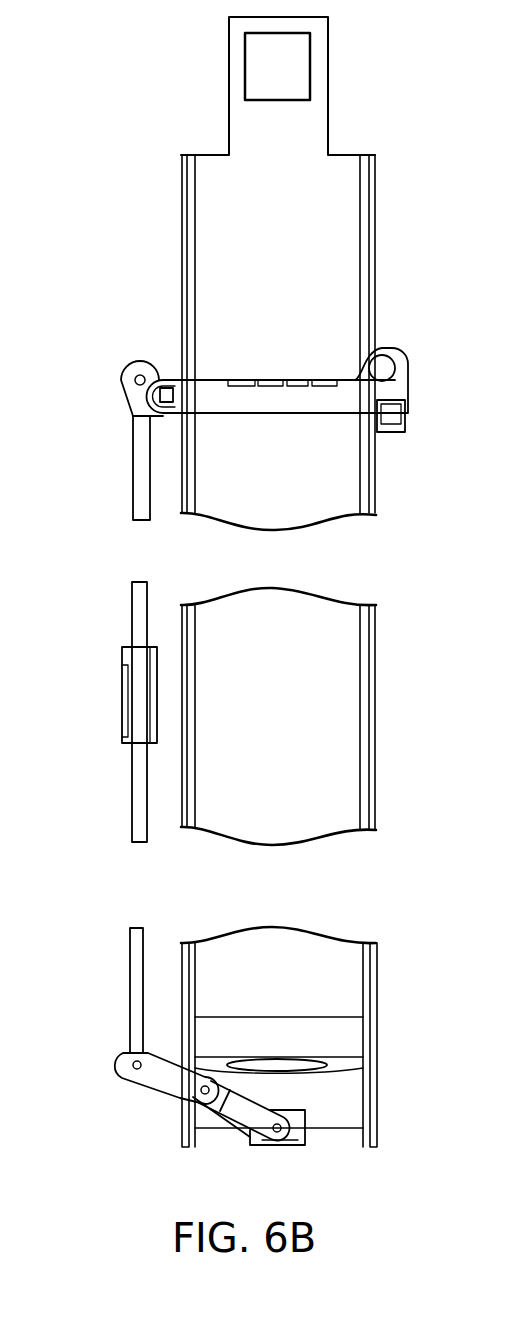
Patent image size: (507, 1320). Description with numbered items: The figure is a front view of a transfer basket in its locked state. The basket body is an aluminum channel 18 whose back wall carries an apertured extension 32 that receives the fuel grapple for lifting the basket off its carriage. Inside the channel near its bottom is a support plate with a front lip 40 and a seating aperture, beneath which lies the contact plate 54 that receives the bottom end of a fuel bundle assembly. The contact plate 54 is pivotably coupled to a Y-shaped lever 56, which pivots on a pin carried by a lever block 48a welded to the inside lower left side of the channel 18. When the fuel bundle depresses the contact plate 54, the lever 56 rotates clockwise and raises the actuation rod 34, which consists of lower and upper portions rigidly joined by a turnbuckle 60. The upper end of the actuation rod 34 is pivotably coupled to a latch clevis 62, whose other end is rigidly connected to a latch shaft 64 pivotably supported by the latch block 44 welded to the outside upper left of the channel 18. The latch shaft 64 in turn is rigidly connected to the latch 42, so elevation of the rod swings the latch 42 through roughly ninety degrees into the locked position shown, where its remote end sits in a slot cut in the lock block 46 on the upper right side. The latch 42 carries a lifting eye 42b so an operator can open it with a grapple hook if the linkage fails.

The channel 18 is at (327, 1000).
The apertured extension 32 is at (310, 82).
The actuation rod 34 is at (124, 618).
The front lip 40 is at (342, 1040).
The latch 42 is at (292, 403).
The lifting eye 42b is at (367, 360).
The latch block 44 is at (143, 418).
The lock block 46 is at (383, 418).
The lever block 48a is at (210, 1105).
The contact plate 54 is at (293, 1122).
The lever 56 is at (168, 1082).
The turnbuckle 60 is at (135, 725).
The latch clevis 62 is at (125, 380).
The latch shaft 64 is at (168, 382).